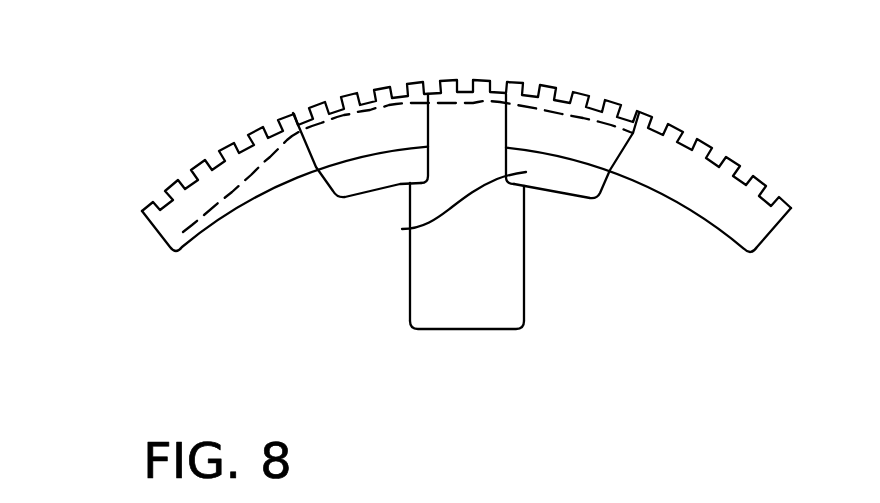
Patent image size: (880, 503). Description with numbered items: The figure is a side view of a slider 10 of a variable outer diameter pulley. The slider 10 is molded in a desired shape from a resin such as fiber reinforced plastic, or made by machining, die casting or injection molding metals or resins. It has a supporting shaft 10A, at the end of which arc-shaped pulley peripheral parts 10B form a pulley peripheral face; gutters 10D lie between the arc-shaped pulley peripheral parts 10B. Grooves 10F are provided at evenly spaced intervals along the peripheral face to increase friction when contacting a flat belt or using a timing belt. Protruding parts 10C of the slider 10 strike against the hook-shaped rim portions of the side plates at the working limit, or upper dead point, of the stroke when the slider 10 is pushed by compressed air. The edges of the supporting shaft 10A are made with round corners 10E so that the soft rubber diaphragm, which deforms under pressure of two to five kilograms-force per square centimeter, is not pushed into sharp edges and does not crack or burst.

The slider 10 is at (130, 263).
The supporting shaft 10A is at (515, 264).
The arc-shaped pulley peripheral parts 10B is at (224, 168).
The protruding parts 10C is at (378, 170).
The gutters 10D is at (360, 102).
The round corners 10E is at (413, 330).
The grooves 10F is at (465, 90).